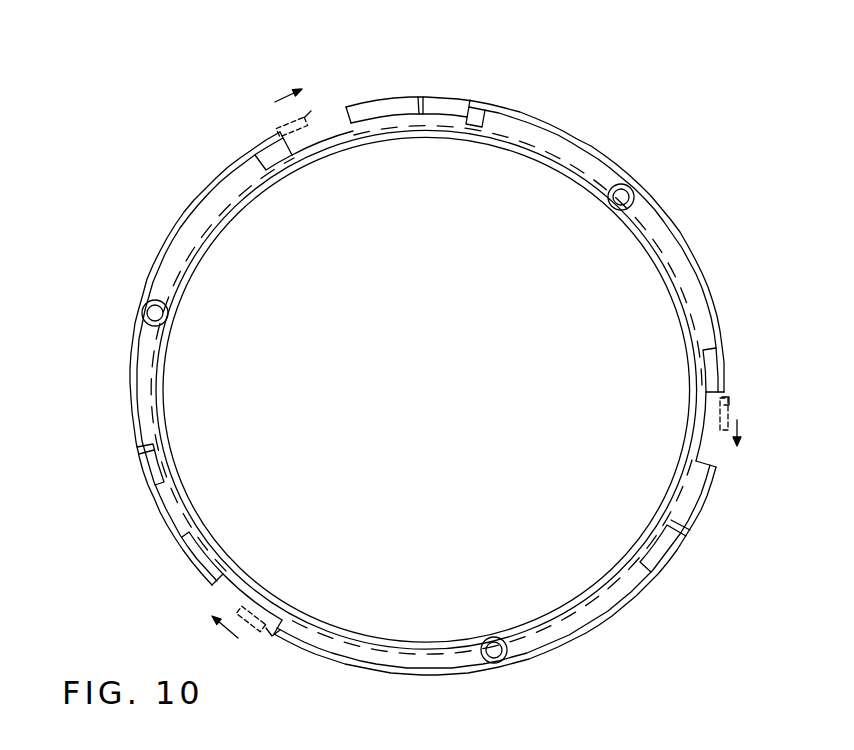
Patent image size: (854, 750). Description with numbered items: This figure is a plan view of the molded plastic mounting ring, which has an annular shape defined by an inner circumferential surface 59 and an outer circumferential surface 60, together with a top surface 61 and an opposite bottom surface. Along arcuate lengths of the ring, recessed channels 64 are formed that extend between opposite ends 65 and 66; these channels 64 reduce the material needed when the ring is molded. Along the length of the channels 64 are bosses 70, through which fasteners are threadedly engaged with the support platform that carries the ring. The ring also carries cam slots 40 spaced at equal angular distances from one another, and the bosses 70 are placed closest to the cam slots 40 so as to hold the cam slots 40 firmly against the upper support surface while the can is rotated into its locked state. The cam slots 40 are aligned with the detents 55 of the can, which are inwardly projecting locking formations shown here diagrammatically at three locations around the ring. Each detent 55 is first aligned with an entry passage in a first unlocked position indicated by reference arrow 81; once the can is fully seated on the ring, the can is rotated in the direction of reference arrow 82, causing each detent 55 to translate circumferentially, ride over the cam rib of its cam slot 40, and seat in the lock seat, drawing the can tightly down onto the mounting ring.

The cam slot 40 is at (374, 95).
The detent 55 is at (321, 94).
The inner circumferential surface 59 is at (491, 142).
The outer circumferential surface 60 is at (498, 106).
The top surface 61 is at (541, 143).
The recessed channel 64 is at (689, 249).
The channel end 65 is at (225, 163).
The channel end 66 is at (170, 448).
The boss 70 is at (144, 307).
The unlocked position 81 is at (270, 645).
The rotation arrow 82 is at (278, 94).